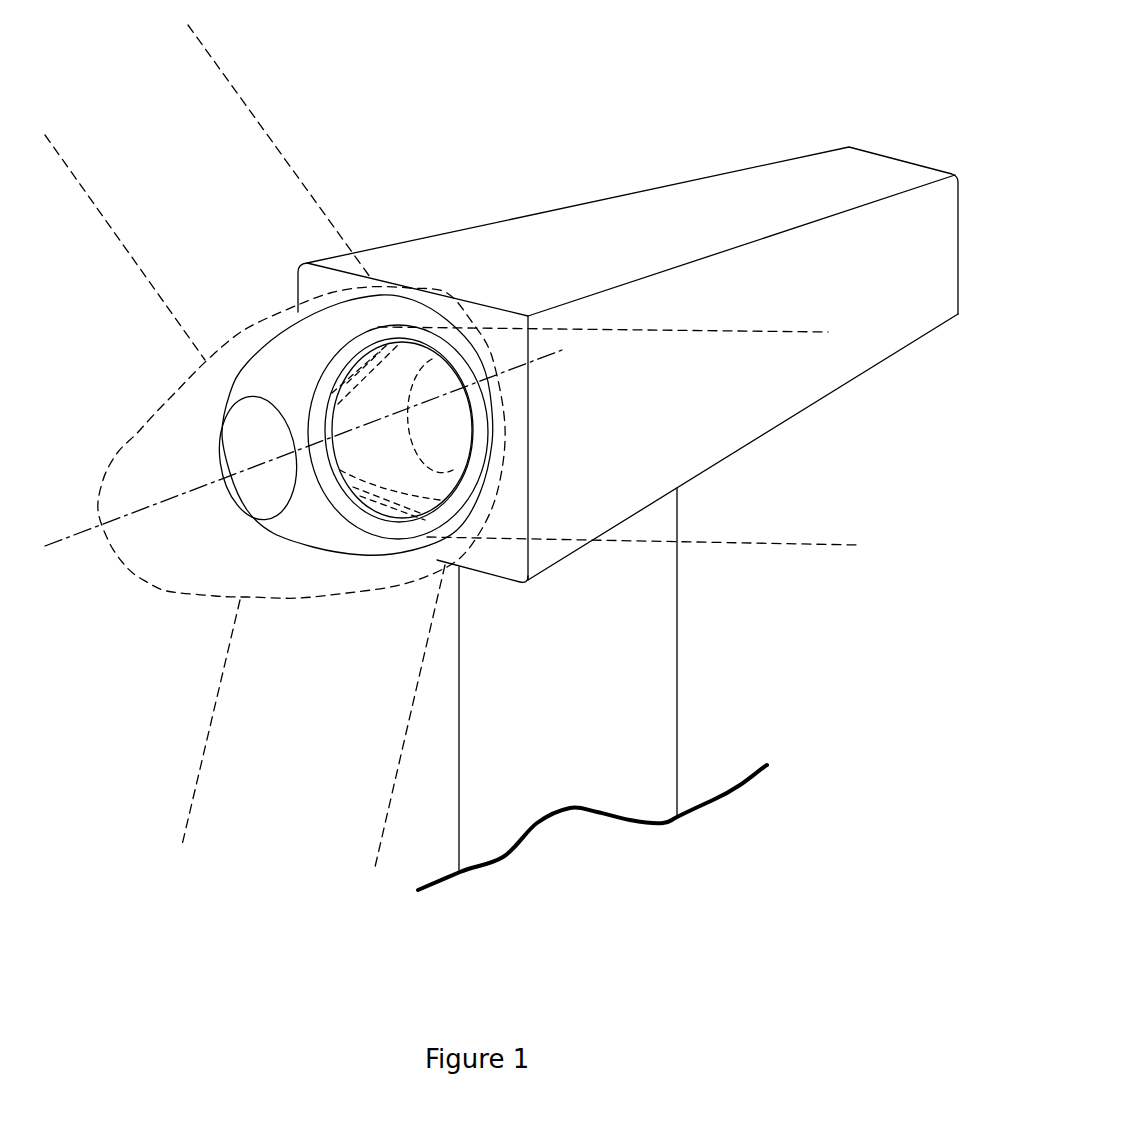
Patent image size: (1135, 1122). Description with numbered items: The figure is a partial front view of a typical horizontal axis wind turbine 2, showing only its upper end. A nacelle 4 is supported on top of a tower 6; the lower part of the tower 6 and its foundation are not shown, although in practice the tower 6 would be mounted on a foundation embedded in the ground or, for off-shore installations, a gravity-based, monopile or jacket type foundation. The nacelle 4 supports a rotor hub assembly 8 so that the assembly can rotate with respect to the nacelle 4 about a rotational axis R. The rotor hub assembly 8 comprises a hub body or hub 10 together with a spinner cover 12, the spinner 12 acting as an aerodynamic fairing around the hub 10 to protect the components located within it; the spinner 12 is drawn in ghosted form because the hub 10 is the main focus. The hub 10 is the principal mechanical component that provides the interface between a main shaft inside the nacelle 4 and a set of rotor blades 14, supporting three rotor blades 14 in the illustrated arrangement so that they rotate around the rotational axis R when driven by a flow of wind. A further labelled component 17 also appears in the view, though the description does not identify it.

The horizontal axis wind turbine 2 is at (733, 68).
The nacelle 4 is at (770, 175).
The tower 6 is at (630, 640).
The rotor hub assembly 8 is at (163, 600).
The hub body 10 is at (297, 525).
The spinner cover 12 is at (145, 407).
The rotor blades 14 is at (242, 130).
The lens 17 is at (427, 453).
The rotational axis R is at (303, 448).